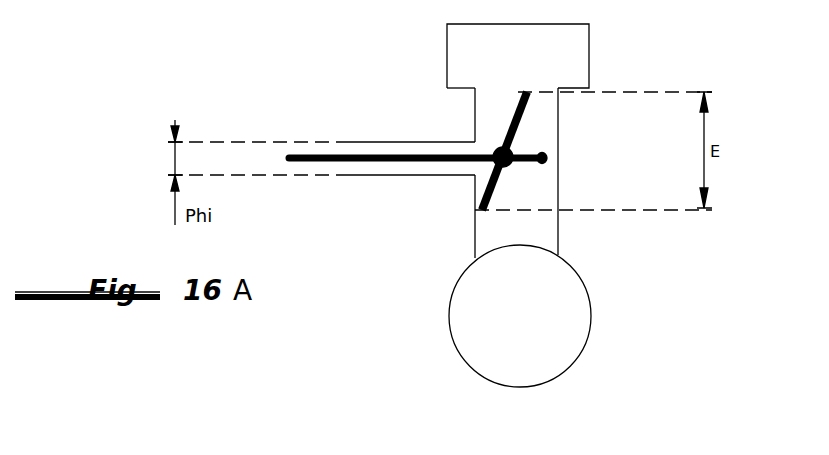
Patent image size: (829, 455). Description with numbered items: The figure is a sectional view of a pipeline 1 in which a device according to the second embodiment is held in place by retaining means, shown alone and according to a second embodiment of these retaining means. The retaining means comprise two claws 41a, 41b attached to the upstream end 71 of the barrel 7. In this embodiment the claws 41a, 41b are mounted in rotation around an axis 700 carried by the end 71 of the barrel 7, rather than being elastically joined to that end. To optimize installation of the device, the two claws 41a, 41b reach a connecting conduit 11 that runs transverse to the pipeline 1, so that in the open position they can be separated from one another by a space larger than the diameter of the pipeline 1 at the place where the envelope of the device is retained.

The pipeline 1 is at (377, 142).
The barrel 7 is at (296, 155).
The claw 41a is at (520, 94).
The claw 41b is at (478, 207).
The transverse connecting conduit 11 is at (537, 233).
The upstream end of the barrel 71 is at (545, 152).
The axis 700 is at (498, 148).